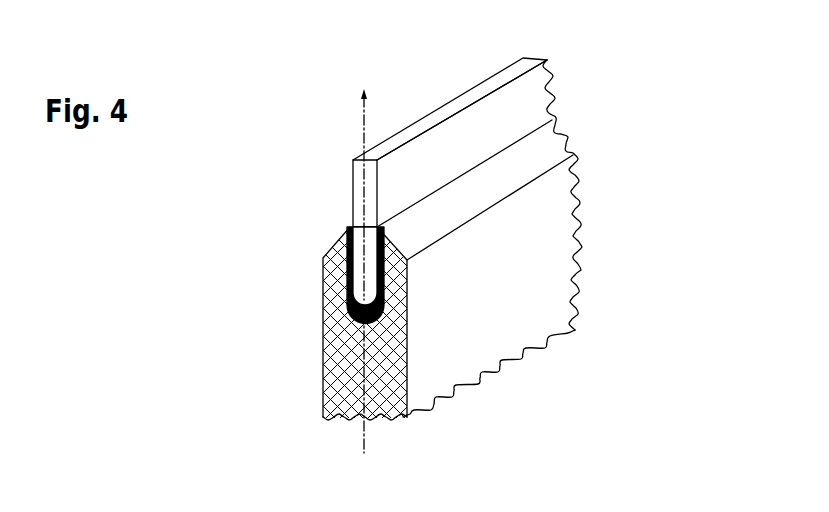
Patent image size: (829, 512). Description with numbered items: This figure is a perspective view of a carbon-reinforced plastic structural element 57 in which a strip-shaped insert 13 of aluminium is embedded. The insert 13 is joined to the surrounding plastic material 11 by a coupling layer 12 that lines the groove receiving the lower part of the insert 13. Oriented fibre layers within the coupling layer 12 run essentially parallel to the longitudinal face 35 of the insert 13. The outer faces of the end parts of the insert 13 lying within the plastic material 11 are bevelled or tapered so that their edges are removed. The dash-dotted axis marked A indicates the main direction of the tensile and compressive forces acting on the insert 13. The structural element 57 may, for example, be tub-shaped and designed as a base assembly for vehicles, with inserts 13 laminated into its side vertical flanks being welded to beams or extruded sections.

The plastic material 11 is at (530, 223).
The coupling layer 12 is at (350, 306).
The strip-shaped insert 13 is at (508, 117).
The longitudinal face 35 is at (472, 123).
The CRP structural element 57 is at (392, 230).